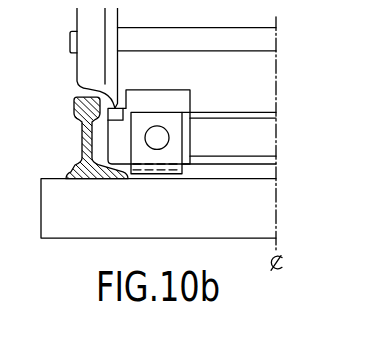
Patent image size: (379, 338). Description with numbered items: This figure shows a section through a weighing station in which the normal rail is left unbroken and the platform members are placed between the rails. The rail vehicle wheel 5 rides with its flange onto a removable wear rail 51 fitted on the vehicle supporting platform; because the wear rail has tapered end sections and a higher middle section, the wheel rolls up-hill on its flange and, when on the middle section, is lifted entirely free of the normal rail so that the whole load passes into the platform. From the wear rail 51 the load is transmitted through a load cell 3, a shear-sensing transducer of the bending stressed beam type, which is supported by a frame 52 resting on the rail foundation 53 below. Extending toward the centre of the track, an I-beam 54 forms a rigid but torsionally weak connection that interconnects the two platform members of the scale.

The vehicle wheel 5 is at (77, 62).
The removable wear rail 51 is at (114, 111).
The frame 52 is at (170, 112).
The load cell 3 is at (150, 124).
The I-beam 54 is at (253, 121).
The rail foundation 53 is at (46, 187).